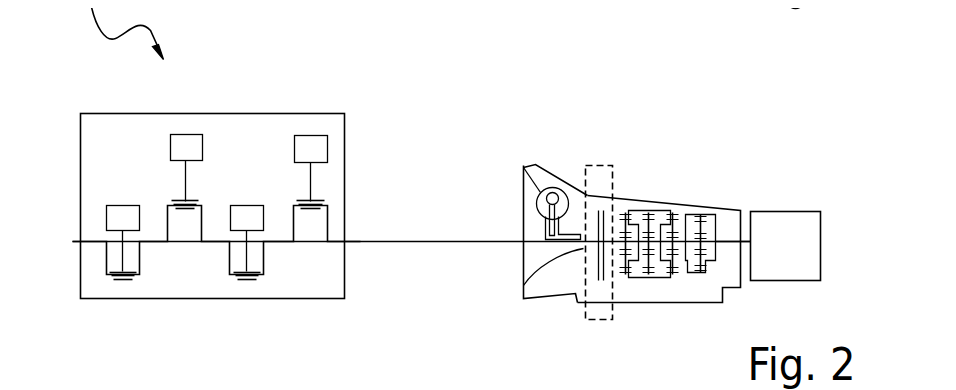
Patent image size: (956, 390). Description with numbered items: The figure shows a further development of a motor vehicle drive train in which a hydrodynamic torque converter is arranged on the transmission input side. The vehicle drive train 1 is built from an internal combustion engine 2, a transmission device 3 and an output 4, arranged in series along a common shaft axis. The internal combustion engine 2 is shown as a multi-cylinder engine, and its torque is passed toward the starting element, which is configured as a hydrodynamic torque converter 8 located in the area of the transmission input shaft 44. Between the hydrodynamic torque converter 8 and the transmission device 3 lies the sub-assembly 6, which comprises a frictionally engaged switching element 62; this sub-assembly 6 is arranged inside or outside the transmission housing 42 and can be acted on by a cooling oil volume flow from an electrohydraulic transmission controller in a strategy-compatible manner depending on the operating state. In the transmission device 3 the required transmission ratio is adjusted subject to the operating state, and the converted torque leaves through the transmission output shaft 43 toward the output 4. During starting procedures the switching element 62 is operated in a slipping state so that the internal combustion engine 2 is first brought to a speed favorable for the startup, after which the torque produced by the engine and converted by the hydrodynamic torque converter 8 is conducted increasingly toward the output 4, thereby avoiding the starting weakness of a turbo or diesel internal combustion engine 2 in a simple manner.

The vehicle drive train 1 is at (192, 389).
The internal combustion engine 2 is at (210, 142).
The transmission device 3 is at (643, 191).
The output 4 is at (793, 227).
The sub-assembly 6 is at (588, 164).
The hydrodynamic torque converter 8 is at (528, 163).
The transmission housing 42 is at (702, 203).
The transmission output shaft 43 is at (743, 240).
The transmission input shaft 44 is at (523, 283).
The switching element 62 is at (586, 189).